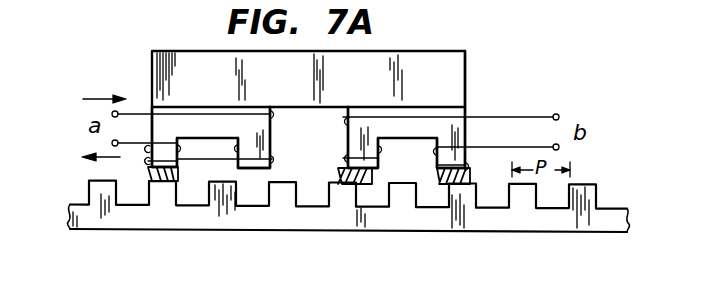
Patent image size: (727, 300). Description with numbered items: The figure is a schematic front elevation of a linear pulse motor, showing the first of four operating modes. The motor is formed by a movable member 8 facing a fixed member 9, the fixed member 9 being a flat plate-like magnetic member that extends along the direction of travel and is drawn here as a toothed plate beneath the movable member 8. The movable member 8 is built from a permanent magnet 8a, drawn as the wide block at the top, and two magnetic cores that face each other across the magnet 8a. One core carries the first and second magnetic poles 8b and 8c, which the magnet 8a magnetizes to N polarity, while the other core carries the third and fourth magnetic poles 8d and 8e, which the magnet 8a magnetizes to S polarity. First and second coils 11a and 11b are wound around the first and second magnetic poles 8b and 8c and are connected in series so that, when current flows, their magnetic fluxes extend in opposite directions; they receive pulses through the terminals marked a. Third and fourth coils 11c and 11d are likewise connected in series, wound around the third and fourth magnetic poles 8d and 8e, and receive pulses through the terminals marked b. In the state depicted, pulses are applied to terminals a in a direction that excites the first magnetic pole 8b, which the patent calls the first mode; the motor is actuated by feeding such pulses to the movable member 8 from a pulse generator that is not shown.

The movable member 8 is at (324, 153).
The permanent magnet 8a is at (430, 57).
The first magnetic pole 8b is at (150, 168).
The second magnetic pole 8c is at (271, 145).
The third magnetic pole 8d is at (347, 143).
The fourth magnetic pole 8e is at (448, 186).
The first coil 11a is at (181, 152).
The second coil 11b is at (237, 150).
The third coil 11c is at (381, 165).
The fourth coil 11d is at (469, 168).
The fixed member 9 is at (548, 233).